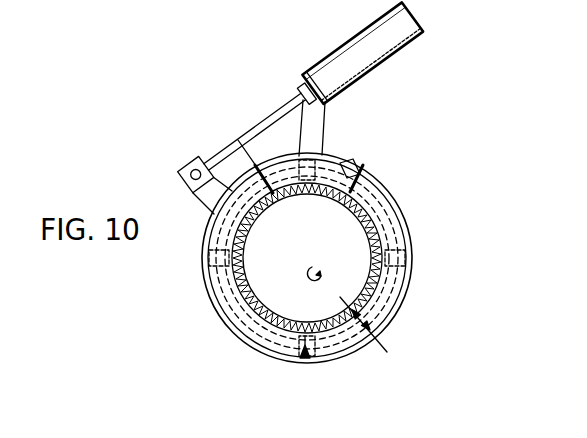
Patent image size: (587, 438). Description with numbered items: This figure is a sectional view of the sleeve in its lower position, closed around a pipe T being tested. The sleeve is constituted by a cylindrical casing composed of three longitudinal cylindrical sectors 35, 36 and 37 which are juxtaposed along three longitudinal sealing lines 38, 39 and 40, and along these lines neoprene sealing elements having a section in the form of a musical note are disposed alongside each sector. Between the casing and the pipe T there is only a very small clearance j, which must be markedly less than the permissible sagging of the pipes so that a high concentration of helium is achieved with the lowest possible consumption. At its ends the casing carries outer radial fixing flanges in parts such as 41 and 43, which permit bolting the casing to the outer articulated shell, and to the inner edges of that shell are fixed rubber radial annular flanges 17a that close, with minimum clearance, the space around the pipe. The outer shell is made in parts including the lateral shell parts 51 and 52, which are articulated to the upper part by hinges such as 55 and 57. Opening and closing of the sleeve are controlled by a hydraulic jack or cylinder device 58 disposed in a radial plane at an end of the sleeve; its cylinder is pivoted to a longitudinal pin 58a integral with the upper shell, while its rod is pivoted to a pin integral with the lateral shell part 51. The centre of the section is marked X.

The hydraulic jack or cylinder device 58 is at (328, 160).
The longitudinal pin 58a is at (303, 84).
The hinge 57 is at (238, 138).
The longitudinal sealing line 38 is at (260, 164).
The longitudinal cylindrical sector 36 is at (351, 176).
The hinge 55 is at (365, 167).
The longitudinal sealing line 39 is at (373, 188).
The shell part 52 is at (410, 229).
The shell part 51 is at (207, 248).
The longitudinal cylindrical sector 35 is at (216, 302).
The outer radial fixing flange part 41 is at (237, 332).
The rubber radial annular flange 17a is at (288, 345).
The longitudinal sealing line 40 is at (305, 360).
The outer radial fixing flange part 43 is at (343, 352).
The longitudinal cylindrical sector 37 is at (407, 300).
The pipe T is at (287, 198).
The axis X is at (317, 265).
The clearance j is at (370, 324).